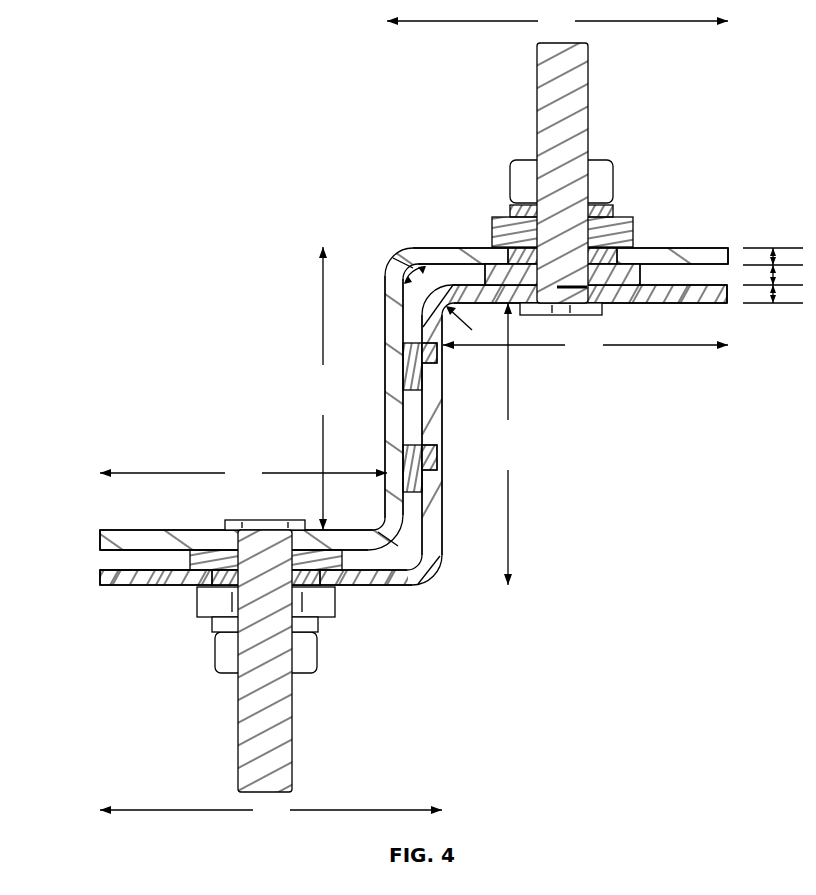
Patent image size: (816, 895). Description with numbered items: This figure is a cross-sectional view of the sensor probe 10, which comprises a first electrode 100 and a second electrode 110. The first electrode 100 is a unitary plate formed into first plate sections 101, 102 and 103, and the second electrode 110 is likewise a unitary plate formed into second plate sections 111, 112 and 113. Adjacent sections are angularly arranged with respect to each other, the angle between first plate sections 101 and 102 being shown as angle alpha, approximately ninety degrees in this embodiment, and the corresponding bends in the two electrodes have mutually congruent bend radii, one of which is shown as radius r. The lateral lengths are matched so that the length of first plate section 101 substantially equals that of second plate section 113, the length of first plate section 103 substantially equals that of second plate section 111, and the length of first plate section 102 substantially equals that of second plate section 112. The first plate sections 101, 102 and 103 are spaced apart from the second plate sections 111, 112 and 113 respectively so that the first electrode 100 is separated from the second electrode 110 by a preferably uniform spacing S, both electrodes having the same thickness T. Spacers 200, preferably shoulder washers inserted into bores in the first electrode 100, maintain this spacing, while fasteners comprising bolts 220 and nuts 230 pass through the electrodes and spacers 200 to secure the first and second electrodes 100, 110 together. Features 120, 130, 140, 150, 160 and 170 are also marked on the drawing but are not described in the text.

The sensor probe 10 is at (172, 232).
The first electrode 100 is at (715, 247).
The first plate section 101 is at (665, 247).
The first plate section 102 is at (387, 333).
The first plate section 103 is at (115, 530).
The second electrode 110 is at (715, 303).
The second plate section 111 is at (665, 303).
The second plate section 112 is at (442, 476).
The second plate section 113 is at (115, 585).
The inner surface of first bracket 120 is at (175, 553).
The inner surface of second bracket 130 is at (173, 570).
The first end of first bracket 140 is at (730, 250).
The second end of first bracket 150 is at (100, 540).
The first end of second bracket 160 is at (728, 296).
The second end of second bracket 170 is at (100, 577).
The spacer 200 is at (487, 278).
The bolt 220 is at (588, 88).
The nut 230 is at (611, 162).